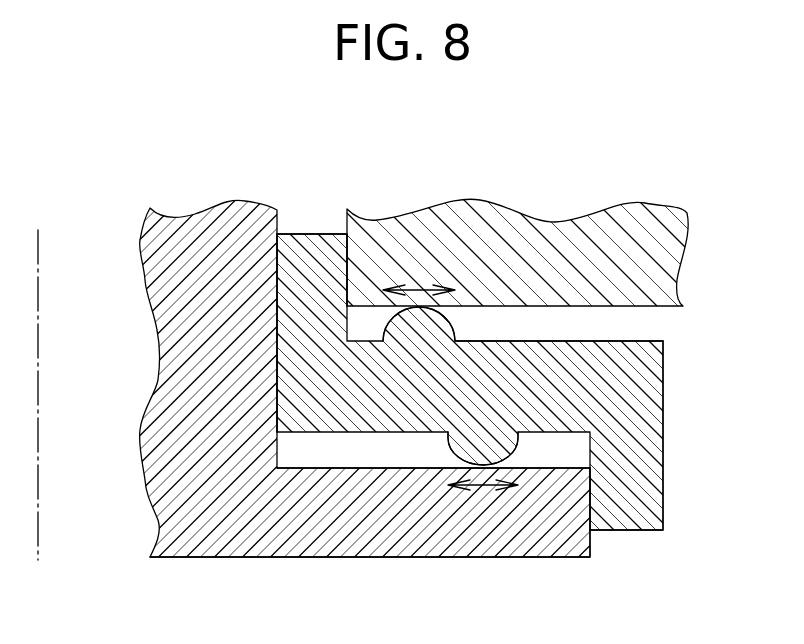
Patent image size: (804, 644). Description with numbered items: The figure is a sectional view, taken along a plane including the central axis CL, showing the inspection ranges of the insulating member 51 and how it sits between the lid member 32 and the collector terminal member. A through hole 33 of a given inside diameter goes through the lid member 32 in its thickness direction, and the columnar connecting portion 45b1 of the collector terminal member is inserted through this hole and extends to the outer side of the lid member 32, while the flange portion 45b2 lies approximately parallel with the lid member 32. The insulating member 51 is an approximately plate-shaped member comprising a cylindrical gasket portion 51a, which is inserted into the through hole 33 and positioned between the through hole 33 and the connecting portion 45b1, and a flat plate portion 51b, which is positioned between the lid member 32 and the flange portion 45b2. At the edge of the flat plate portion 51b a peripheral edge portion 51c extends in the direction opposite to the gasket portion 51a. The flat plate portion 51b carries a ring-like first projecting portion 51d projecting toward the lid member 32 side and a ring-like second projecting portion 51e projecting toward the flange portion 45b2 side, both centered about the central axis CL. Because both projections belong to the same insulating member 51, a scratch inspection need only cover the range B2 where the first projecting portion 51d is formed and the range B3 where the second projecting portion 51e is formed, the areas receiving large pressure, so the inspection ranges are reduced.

The lid member 32 is at (624, 258).
The through hole 33 is at (345, 267).
The connecting portion 45b1 is at (202, 333).
The flange portion 45b2 is at (555, 515).
The insulating member 51 is at (714, 382).
The gasket portion 51a is at (310, 290).
The flat plate portion 51b is at (541, 392).
The peripheral edge portion 51c is at (630, 482).
The first projecting portion 51d is at (423, 327).
The second projecting portion 51e is at (480, 447).
The range where the first projecting portion is formed B2 is at (417, 285).
The range where the second projecting portion is formed B3 is at (482, 490).
The central axis CL is at (40, 258).